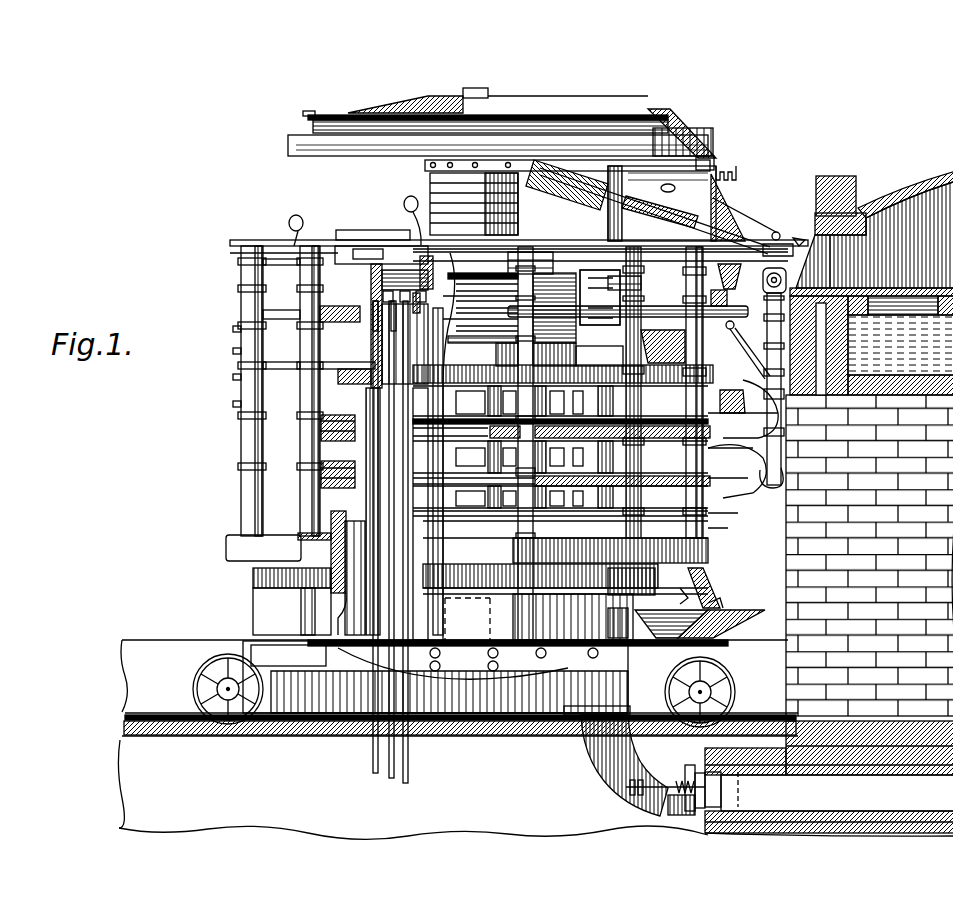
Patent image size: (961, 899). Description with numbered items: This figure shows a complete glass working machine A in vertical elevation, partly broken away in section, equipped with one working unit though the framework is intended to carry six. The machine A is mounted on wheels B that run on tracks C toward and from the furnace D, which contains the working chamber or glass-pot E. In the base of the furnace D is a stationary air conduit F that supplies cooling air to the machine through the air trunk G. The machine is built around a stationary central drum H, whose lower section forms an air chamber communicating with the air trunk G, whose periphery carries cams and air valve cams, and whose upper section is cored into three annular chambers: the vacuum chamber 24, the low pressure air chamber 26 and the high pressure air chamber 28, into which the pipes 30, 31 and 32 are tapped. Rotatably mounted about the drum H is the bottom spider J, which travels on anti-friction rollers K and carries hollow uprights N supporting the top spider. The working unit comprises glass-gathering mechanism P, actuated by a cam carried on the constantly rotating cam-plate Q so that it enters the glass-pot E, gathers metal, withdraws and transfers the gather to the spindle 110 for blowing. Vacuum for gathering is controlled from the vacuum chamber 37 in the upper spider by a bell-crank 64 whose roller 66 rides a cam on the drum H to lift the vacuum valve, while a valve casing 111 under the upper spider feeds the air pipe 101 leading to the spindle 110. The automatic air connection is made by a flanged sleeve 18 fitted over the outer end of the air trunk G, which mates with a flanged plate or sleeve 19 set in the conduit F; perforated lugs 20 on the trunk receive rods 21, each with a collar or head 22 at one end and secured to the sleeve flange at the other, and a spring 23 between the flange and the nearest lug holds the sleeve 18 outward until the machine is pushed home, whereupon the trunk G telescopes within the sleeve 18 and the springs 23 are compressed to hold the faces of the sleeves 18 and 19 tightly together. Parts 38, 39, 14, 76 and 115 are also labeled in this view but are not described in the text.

The cam-plate Q is at (302, 138).
The glass-gathering mechanism P is at (726, 196).
The working chamber or glass-pot E is at (888, 195).
The complete machine A is at (228, 252).
The bracket 38 is at (342, 238).
The vacuum chamber 37 is at (362, 240).
The plate 39 is at (365, 268).
The high pressure air chamber 28 is at (375, 287).
The low pressure air chamber 26 is at (378, 302).
The vacuum chamber 24 is at (370, 314).
The bell-crank 64 is at (545, 257).
The valve casing 111 is at (633, 275).
The block 14 is at (715, 289).
The lever arm 76 is at (732, 268).
The pivot ring 115 is at (752, 268).
The spindle 110 is at (722, 317).
The air pipe 101 is at (743, 409).
The roller 66 is at (600, 309).
The stationary central drum H is at (595, 443).
The hollow uprights N is at (295, 507).
The bottom spider J is at (232, 550).
The rollers K is at (693, 588).
The wheels B is at (195, 668).
The tracks C is at (458, 739).
The furnace D is at (869, 616).
The pipe 32 is at (365, 757).
The pipe 31 is at (381, 768).
The pipe 30 is at (408, 768).
The air trunk G is at (583, 762).
The collar or head 22 is at (628, 773).
The rod 21 is at (674, 777).
The flanged sleeve 18 is at (694, 775).
The flanged plate or sleeve 19 is at (713, 775).
The stationary air conduit F is at (829, 778).
The perforated lugs 20 is at (632, 785).
The spring 23 is at (656, 806).